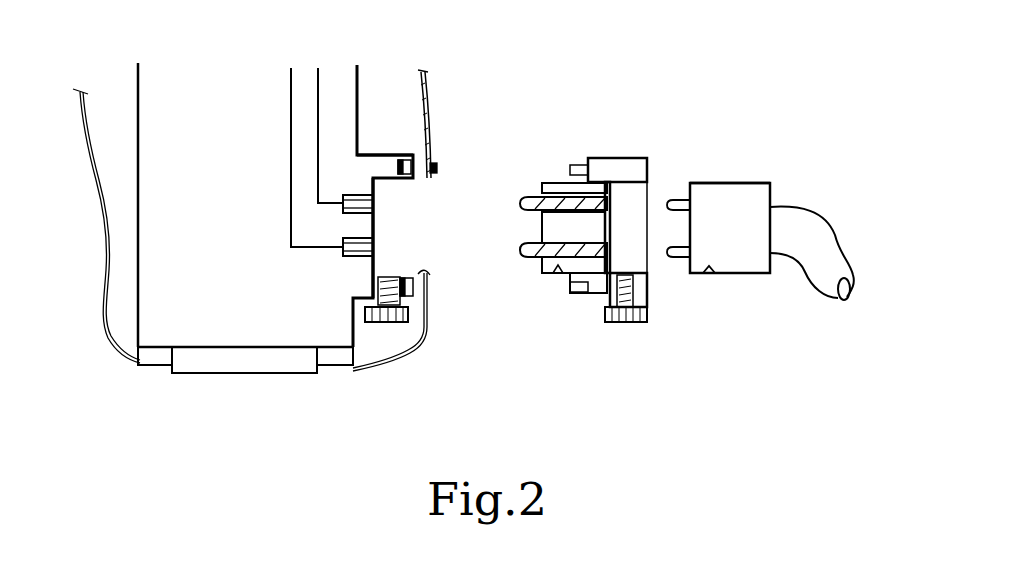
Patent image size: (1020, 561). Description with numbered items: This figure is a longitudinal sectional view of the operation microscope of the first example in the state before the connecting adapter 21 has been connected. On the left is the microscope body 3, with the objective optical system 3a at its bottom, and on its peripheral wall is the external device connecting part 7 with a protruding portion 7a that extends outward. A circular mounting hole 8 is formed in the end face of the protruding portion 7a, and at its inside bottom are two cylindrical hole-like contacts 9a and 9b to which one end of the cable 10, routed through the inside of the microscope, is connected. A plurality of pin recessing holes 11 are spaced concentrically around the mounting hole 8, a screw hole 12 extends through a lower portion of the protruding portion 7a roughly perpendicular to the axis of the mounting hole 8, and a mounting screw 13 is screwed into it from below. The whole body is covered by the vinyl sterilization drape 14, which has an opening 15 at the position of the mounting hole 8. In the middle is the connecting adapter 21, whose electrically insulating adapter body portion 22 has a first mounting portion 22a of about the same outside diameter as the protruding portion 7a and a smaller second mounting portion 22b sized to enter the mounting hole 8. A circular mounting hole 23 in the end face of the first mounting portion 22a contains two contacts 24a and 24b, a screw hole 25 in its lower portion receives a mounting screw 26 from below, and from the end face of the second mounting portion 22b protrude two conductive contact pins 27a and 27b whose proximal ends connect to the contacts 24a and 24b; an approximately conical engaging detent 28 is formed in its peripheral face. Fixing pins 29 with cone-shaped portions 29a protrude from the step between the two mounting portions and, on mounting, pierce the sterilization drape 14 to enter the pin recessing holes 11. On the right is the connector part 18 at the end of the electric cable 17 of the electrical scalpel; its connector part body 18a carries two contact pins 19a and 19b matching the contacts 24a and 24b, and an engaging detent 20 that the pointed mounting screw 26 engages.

The microscope body 3 is at (153, 88).
The objective optical system 3a is at (240, 373).
The external device connecting part 7 is at (404, 141).
The protruding portion 7a is at (367, 150).
The mounting hole 8 is at (398, 190).
The contact 9a is at (355, 194).
The contact 9b is at (340, 252).
The cable 10 is at (330, 61).
The pin recessing holes 11 is at (432, 169).
The screw hole 12 is at (388, 275).
The mounting screw 13 is at (388, 322).
The sterilization drape 14 is at (100, 350).
The opening 15 is at (432, 273).
The electric cable 17 is at (823, 230).
The connector part 18 is at (749, 168).
The connector part body 18a is at (768, 195).
The contact pin 19a is at (688, 199).
The contact pin 19b is at (682, 258).
The engaging detent 20 is at (710, 273).
The connecting adapter 21 is at (622, 158).
The adapter body portion 22 is at (612, 160).
The first mounting portion 22a is at (640, 197).
The second mounting portion 22b is at (548, 272).
The mounting hole 23 is at (660, 185).
The contact 24a is at (578, 186).
The contact 24b is at (600, 283).
The screw hole 25 is at (627, 276).
The mounting screw 26 is at (640, 322).
The contact pin 27a is at (522, 204).
The contact pin 27b is at (535, 255).
The engaging detent 28 is at (558, 275).
The fixing pins 29 is at (580, 165).
The cone-shaped portions 29a is at (585, 183).